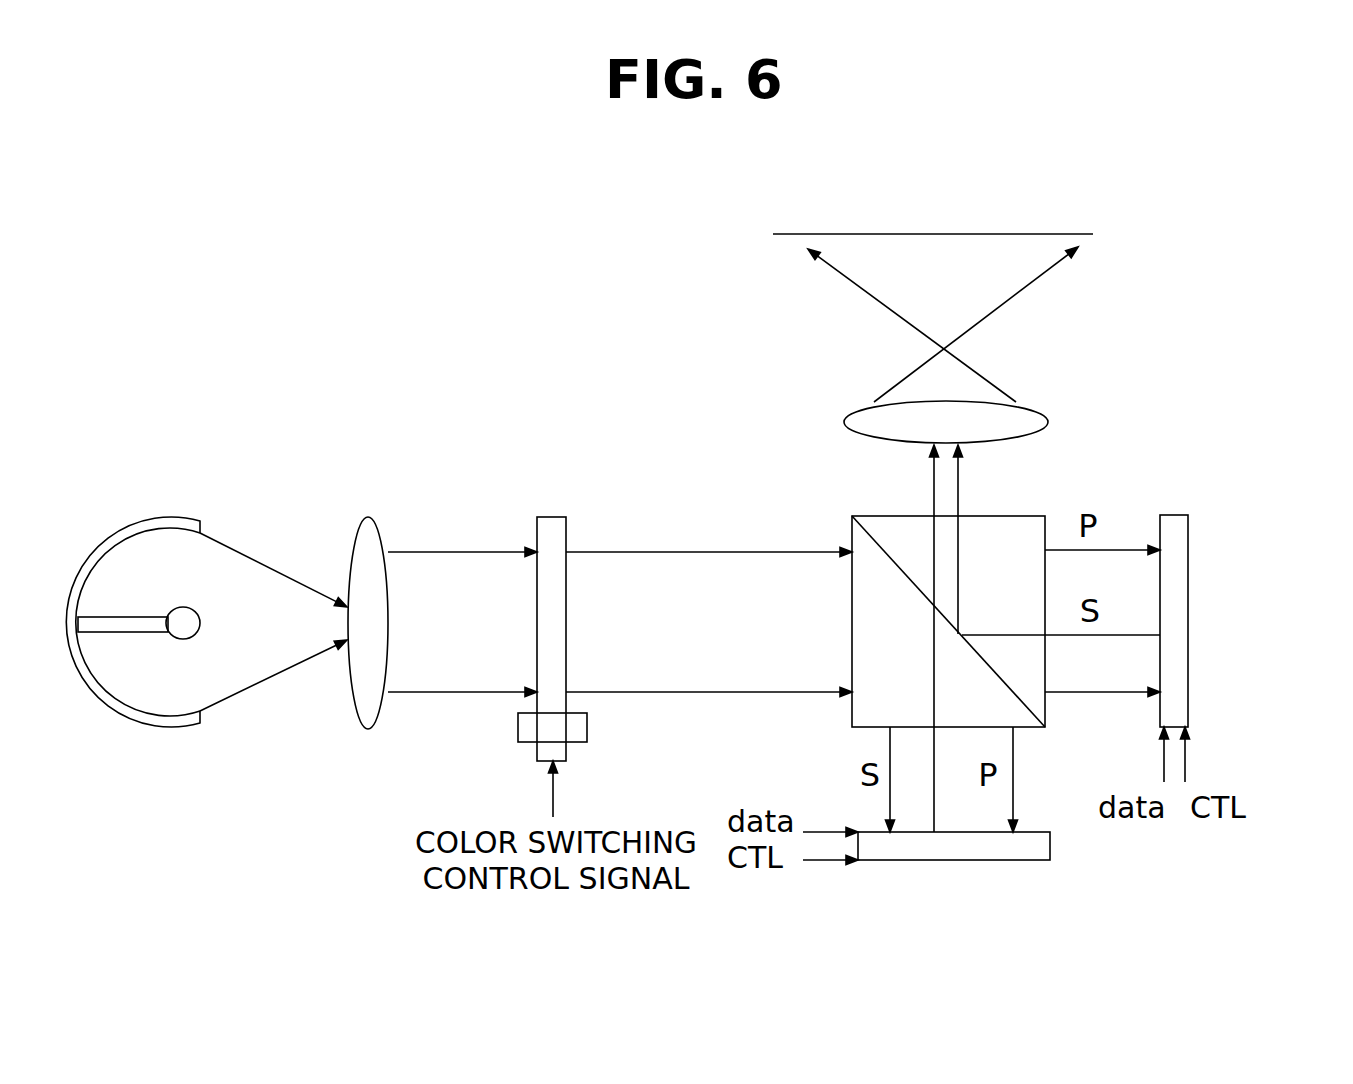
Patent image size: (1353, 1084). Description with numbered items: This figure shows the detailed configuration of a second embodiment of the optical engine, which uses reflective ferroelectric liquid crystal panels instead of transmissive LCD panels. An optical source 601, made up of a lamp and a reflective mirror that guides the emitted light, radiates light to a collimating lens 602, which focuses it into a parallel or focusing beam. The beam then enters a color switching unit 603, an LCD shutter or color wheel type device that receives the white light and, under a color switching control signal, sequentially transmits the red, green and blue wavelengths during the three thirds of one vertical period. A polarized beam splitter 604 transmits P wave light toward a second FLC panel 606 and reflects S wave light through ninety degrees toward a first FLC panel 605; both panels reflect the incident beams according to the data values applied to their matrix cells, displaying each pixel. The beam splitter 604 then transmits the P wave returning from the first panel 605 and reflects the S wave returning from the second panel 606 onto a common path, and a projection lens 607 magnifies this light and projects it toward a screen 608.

The optical source 601 is at (152, 521).
The collimating lens 602 is at (368, 517).
The color switching unit 603 is at (545, 517).
The polarized beam splitter 604 is at (877, 516).
The first FLC panel 605 is at (967, 860).
The second FLC panel 606 is at (1188, 618).
The projection lens 607 is at (1048, 422).
The screen 608 is at (1093, 234).